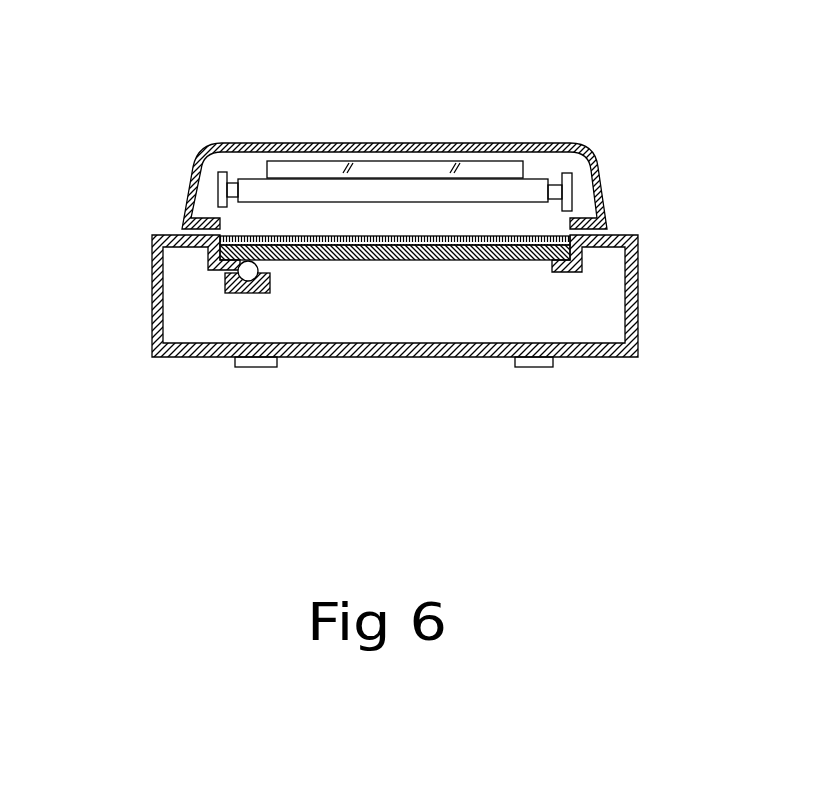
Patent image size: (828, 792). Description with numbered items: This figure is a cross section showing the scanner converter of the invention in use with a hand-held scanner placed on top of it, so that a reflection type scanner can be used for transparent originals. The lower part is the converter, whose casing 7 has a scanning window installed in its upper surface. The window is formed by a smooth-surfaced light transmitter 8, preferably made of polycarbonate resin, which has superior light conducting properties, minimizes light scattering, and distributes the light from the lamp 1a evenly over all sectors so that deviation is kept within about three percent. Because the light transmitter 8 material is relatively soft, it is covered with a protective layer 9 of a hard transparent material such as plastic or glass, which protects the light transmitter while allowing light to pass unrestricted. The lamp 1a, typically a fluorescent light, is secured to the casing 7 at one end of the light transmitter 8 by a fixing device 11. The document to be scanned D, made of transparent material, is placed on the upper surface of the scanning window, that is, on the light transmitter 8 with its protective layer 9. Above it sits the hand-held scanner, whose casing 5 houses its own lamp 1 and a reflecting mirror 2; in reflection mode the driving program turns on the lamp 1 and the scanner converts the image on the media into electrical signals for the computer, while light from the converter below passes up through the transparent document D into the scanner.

The lamp 1 is at (252, 187).
The lamp 1a is at (223, 282).
The reflecting mirror 2 is at (503, 168).
The casing 5 is at (593, 158).
The document to be scanned D is at (608, 217).
The casing 7 is at (637, 247).
The light transmitter 8 is at (362, 262).
The protective layer 9 is at (483, 260).
The fixing device 11 is at (252, 290).